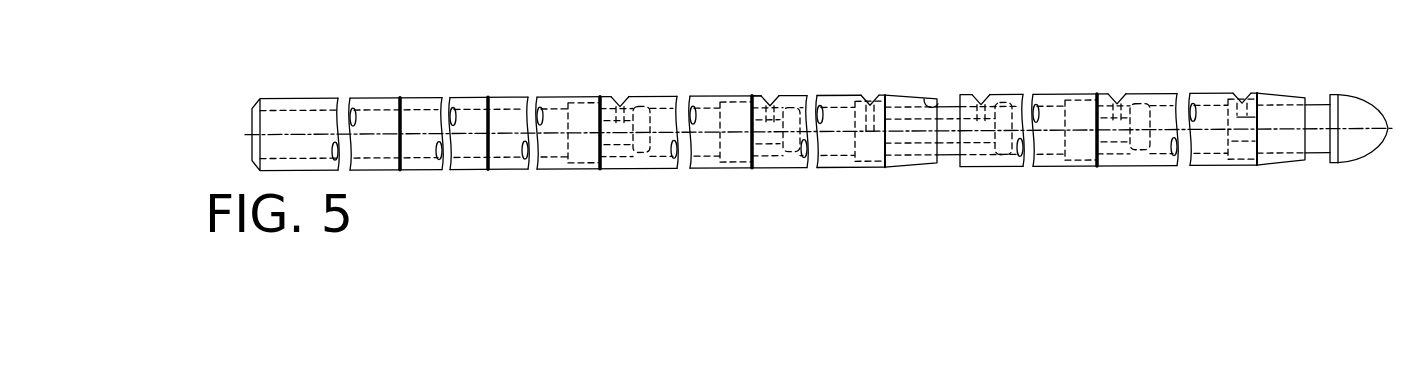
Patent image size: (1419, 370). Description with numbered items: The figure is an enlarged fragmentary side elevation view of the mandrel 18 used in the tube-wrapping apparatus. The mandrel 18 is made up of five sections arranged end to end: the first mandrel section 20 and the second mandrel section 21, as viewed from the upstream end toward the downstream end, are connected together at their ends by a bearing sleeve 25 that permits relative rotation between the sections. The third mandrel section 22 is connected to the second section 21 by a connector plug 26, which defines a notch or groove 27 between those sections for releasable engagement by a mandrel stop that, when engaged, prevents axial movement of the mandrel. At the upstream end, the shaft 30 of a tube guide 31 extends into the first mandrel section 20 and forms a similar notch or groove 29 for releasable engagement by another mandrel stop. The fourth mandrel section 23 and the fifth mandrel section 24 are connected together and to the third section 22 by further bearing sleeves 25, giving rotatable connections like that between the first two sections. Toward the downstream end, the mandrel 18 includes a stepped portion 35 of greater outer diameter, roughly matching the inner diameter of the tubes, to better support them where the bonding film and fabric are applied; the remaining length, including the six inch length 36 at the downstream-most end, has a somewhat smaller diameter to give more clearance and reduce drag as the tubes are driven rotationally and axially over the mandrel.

The mandrel 18 is at (988, 37).
The first mandrel section 20 is at (1212, 92).
The second mandrel section 21 is at (997, 95).
The third mandrel section 22 is at (840, 97).
The fourth mandrel section 23 is at (707, 98).
The fifth mandrel section 24 is at (508, 98).
The bearing sleeve 25 is at (617, 97).
The connector plug 26 is at (925, 107).
The notch or groove 27 is at (948, 102).
The notch or groove 29 is at (1313, 115).
The shaft 30 is at (1317, 106).
The tube guide 31 is at (1363, 107).
The stepped portion 35 is at (418, 98).
The six inch length 36 is at (306, 98).